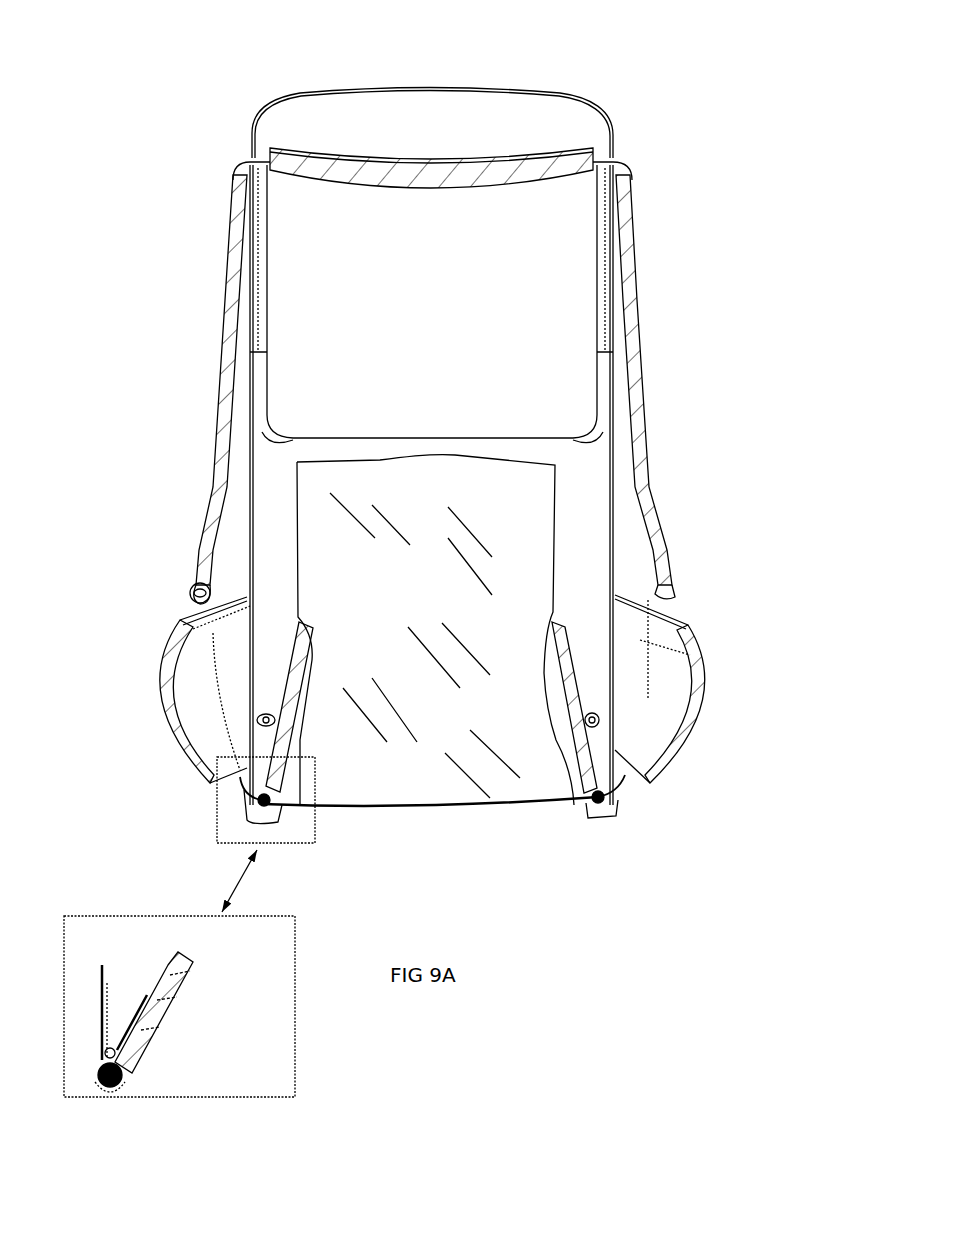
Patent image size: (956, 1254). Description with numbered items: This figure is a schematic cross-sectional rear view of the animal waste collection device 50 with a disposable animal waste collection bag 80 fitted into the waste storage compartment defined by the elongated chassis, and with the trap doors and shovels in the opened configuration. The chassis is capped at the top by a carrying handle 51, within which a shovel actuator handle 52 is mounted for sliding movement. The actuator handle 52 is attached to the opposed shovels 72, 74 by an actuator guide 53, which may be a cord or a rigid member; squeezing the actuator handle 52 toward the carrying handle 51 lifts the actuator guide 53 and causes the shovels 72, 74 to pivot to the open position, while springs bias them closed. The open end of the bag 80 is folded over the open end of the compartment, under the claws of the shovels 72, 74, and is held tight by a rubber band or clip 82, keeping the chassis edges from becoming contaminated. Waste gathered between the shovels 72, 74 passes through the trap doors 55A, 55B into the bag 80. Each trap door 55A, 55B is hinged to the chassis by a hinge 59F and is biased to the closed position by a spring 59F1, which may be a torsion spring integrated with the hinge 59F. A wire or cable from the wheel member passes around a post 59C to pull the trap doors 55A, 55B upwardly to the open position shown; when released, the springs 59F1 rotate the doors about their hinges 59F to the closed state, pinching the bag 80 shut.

The animal waste collection device 50 is at (680, 162).
The carrying handle 51 is at (297, 87).
The shovel actuator handle 52 is at (310, 163).
The actuator guide 53 is at (228, 333).
The shovel 72 is at (203, 652).
The shovel 74 is at (647, 632).
The animal waste collection bag 80 is at (430, 706).
The clip 82 is at (540, 813).
The trap door 55A is at (197, 978).
The trap door 55B is at (575, 676).
The post 59C is at (258, 713).
The hinge 59F is at (247, 810).
The spring 59F1 is at (117, 1038).